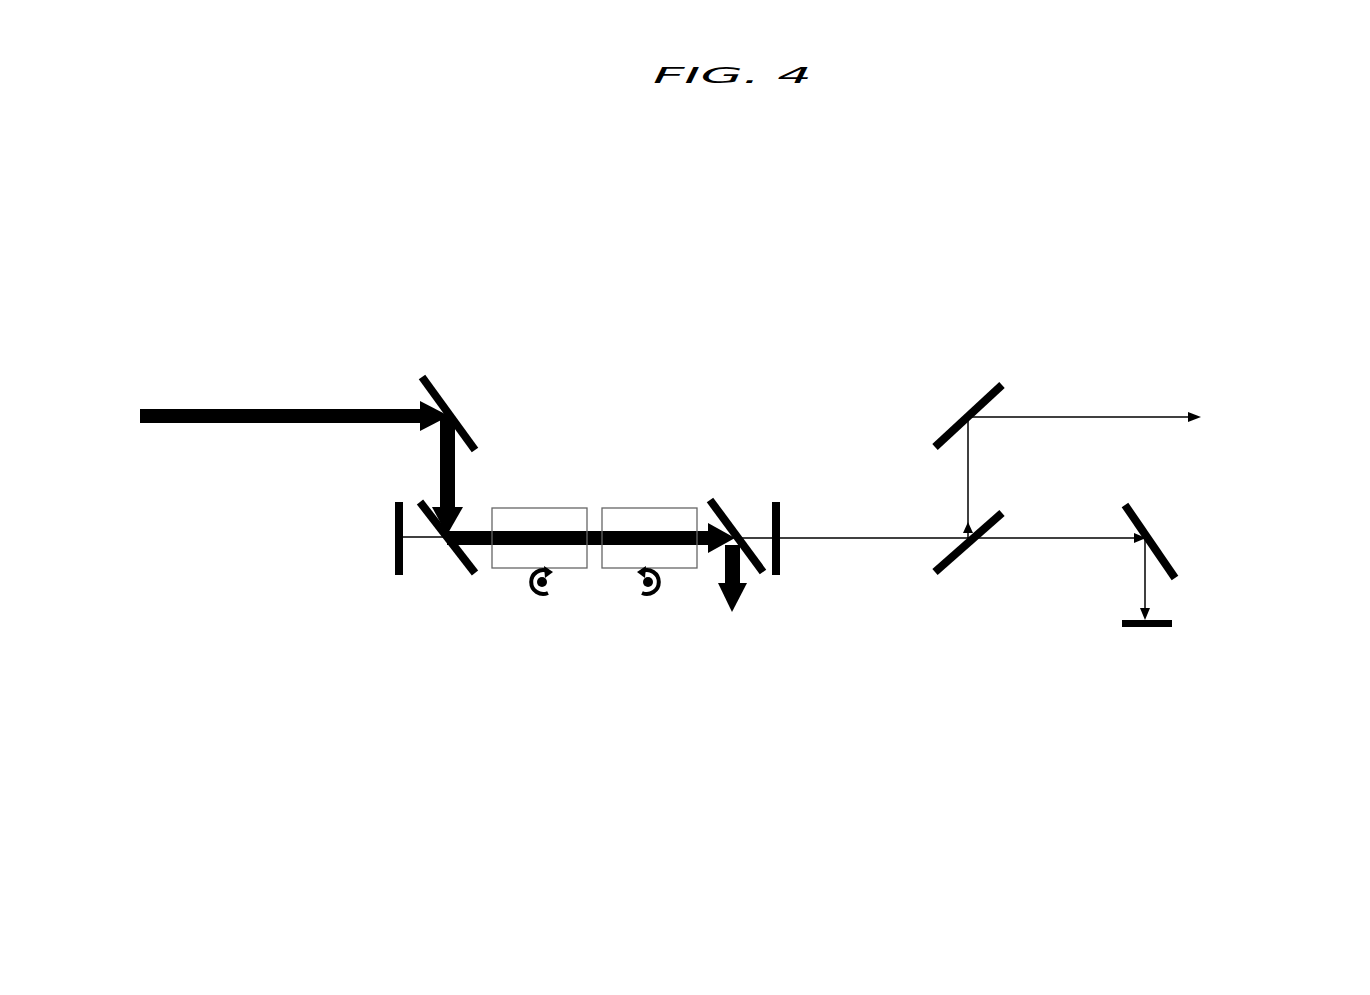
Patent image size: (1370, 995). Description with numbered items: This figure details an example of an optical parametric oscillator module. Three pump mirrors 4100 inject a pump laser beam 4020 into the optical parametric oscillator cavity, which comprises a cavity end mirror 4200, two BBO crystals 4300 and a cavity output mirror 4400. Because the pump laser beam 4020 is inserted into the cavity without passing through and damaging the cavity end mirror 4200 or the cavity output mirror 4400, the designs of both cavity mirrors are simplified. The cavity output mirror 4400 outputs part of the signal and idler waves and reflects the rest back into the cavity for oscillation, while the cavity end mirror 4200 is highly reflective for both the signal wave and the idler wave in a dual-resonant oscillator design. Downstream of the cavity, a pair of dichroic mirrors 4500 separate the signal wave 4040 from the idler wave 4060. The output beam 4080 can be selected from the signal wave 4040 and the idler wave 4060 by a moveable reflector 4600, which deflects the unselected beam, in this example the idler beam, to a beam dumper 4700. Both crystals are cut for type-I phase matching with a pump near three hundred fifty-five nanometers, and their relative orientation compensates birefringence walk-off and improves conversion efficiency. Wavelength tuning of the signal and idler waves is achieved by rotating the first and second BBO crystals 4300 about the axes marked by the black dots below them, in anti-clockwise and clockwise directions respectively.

The pump laser beam 4020 is at (163, 426).
The pump mirror 4100 is at (718, 499).
The cavity end mirror 4200 is at (394, 502).
The BBO crystal 4300 is at (607, 560).
The cavity output mirror 4400 is at (769, 508).
The dichroic mirror 4500 is at (942, 586).
The signal wave 4040 is at (1033, 413).
The output beam 4080 is at (1190, 412).
The idler wave 4060 is at (1022, 541).
The moveable reflector 4600 is at (1173, 562).
The beam dumper 4700 is at (1173, 617).